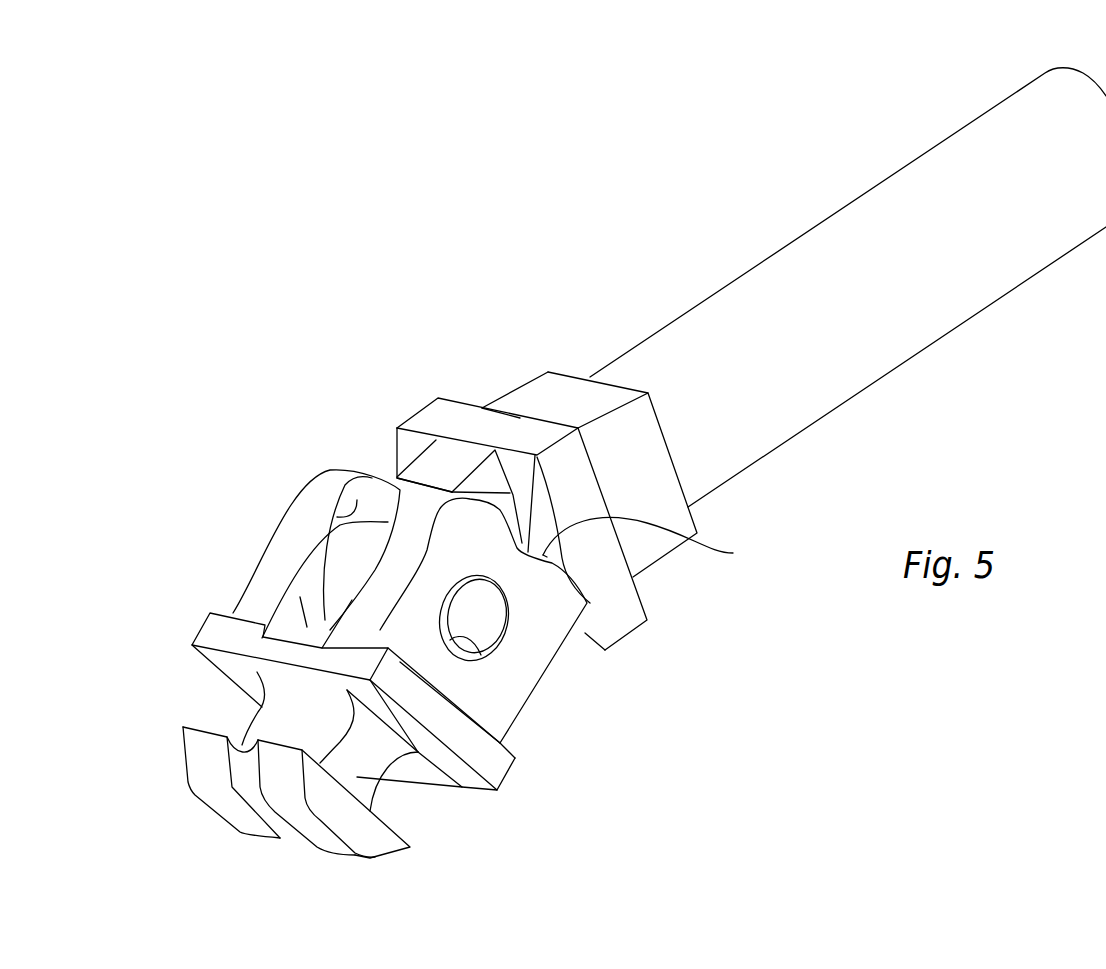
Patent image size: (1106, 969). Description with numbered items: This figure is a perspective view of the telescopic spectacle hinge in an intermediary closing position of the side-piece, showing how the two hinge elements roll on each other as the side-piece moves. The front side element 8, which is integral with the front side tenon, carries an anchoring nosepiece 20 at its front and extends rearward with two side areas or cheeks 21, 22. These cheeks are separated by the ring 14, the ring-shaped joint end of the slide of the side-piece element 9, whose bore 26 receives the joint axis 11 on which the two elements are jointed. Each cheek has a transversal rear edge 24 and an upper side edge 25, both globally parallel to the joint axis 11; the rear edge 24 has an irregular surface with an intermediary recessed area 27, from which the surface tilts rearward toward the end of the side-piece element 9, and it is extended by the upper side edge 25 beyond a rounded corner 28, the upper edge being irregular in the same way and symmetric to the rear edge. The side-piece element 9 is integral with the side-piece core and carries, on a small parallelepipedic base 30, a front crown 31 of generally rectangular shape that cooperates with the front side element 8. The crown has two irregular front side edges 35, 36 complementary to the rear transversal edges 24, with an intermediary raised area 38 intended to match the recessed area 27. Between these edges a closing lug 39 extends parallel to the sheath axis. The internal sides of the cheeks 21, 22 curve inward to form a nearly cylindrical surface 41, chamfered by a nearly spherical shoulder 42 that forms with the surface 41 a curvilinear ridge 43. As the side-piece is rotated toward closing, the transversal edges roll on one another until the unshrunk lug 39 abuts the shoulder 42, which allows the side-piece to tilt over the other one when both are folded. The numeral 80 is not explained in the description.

The front side element 8 is at (577, 706).
The side-piece element 9 is at (838, 453).
The joint axis 11 is at (483, 613).
The ring 14 is at (350, 575).
The anchoring nosepiece 20 is at (385, 765).
The side area 21 is at (520, 677).
The side area 22 is at (337, 516).
The transversal rear edge 24 is at (733, 553).
The upper side edge 25 is at (425, 520).
The bore 26 is at (481, 657).
The recessed area 27 is at (530, 545).
The rounded corner 28 is at (463, 515).
The parallelepipedic base 30 is at (553, 402).
The front crown 31 is at (477, 428).
The front side edge 35 is at (413, 443).
The front side edge 36 is at (585, 633).
The raised area 38 is at (562, 558).
The closing lug 39 is at (433, 465).
The cylindrical surface 41 is at (318, 632).
The shoulder 42 is at (290, 627).
The curvilinear ridge 43 is at (300, 610).
The insert lobe edge 80 is at (340, 532).